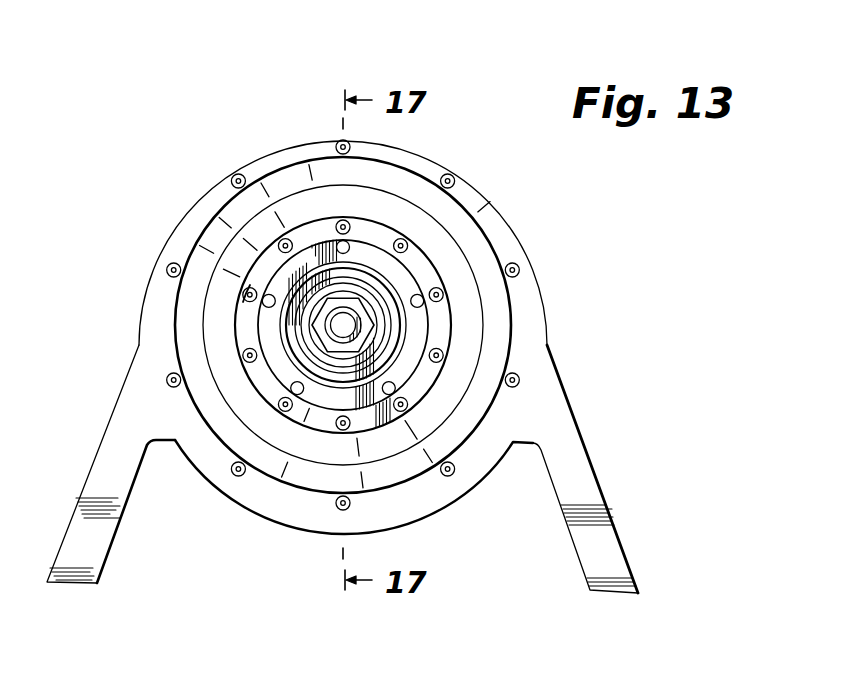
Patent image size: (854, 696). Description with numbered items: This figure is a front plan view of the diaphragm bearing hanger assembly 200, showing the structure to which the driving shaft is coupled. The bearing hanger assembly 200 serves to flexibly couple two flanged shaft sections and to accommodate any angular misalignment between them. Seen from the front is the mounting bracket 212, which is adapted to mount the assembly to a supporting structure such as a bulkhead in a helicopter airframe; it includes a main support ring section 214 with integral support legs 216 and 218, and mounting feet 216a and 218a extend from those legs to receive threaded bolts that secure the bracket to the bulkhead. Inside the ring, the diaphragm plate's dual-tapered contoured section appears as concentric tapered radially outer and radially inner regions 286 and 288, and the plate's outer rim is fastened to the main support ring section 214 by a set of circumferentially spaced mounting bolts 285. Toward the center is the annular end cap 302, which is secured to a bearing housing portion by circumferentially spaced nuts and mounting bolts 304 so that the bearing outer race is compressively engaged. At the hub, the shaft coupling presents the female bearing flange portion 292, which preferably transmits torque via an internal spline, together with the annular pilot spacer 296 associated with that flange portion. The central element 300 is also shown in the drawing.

The bearing hanger assembly 200 is at (367, 323).
The mounting bracket 212 is at (548, 332).
The main support ring section 214 is at (483, 208).
The support leg 216 is at (99, 486).
The mounting foot 216a is at (72, 580).
The support leg 218 is at (622, 511).
The mounting foot 218a is at (624, 596).
The mounting bolts 285 is at (480, 482).
The radially outer region 286 is at (487, 270).
The radially inner region 288 is at (392, 440).
The female bearing flange portion 292 is at (265, 338).
The annular pilot spacer 296 is at (316, 300).
The shaft nut 300 is at (356, 300).
The annular end cap 302 is at (303, 420).
The nuts and mounting bolts 304 is at (240, 296).